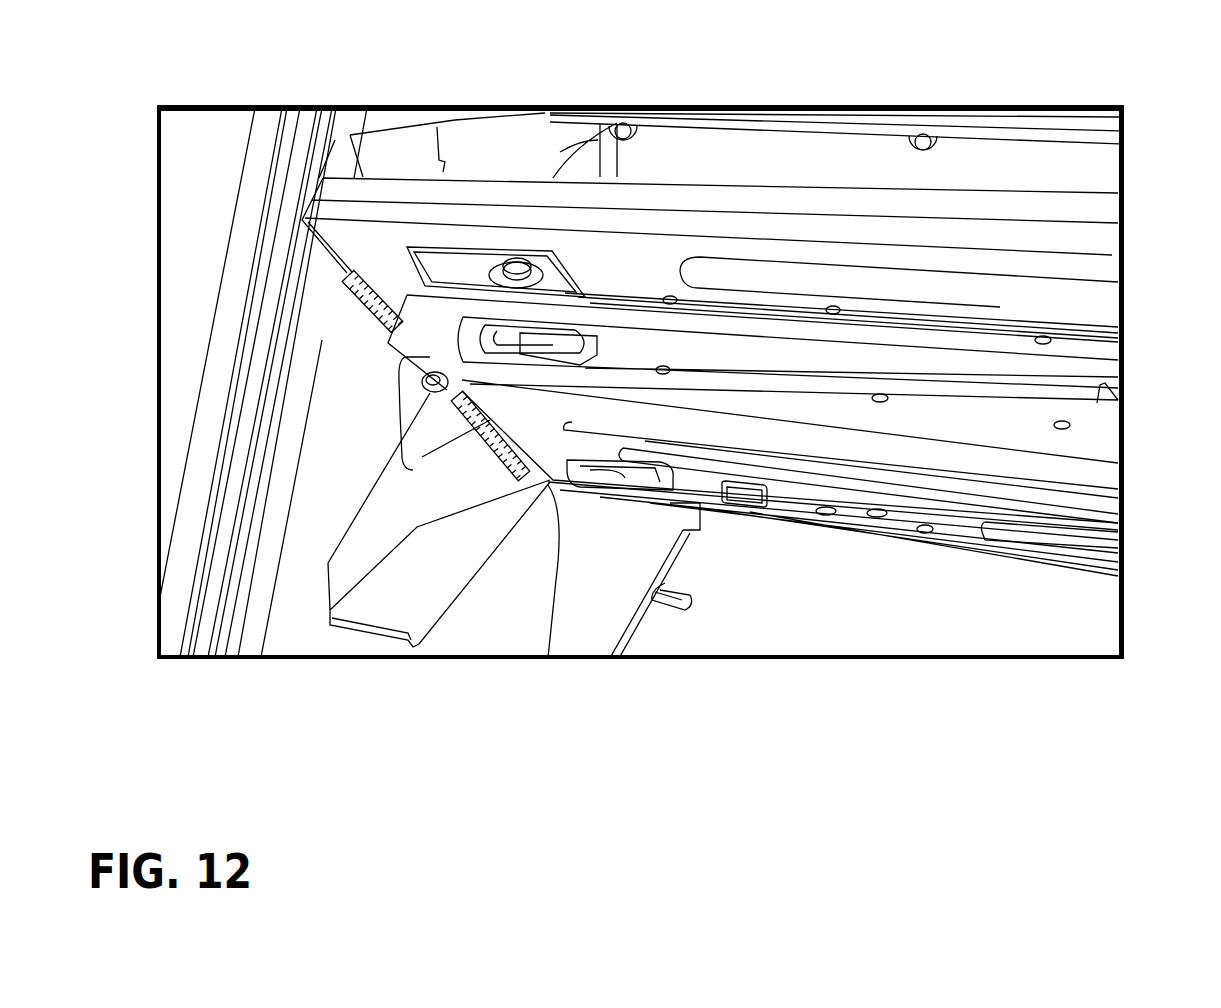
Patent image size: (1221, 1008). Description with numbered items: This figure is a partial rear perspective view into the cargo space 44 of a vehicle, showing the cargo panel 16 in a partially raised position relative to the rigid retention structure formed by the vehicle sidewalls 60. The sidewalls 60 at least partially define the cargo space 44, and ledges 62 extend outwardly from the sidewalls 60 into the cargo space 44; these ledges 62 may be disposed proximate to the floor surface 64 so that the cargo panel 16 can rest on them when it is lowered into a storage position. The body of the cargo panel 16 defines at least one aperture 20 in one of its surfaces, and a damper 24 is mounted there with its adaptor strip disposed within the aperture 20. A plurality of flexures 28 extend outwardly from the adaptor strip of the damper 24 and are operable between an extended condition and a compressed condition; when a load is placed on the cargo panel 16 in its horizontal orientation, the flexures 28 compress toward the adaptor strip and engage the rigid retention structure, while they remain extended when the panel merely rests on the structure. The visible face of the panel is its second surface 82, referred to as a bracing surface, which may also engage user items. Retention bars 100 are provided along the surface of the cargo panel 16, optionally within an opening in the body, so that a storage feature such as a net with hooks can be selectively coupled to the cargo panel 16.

The cargo panel 16 is at (475, 175).
The aperture 20 is at (368, 270).
The damper 24 is at (347, 280).
The flexures 28 is at (360, 331).
The cargo space 44 is at (730, 605).
The sidewalls 60 is at (352, 380).
The ledges 62 is at (371, 607).
The floor surface 64 is at (865, 617).
The second surface 82 is at (1083, 233).
The retention bars 100 is at (517, 270).